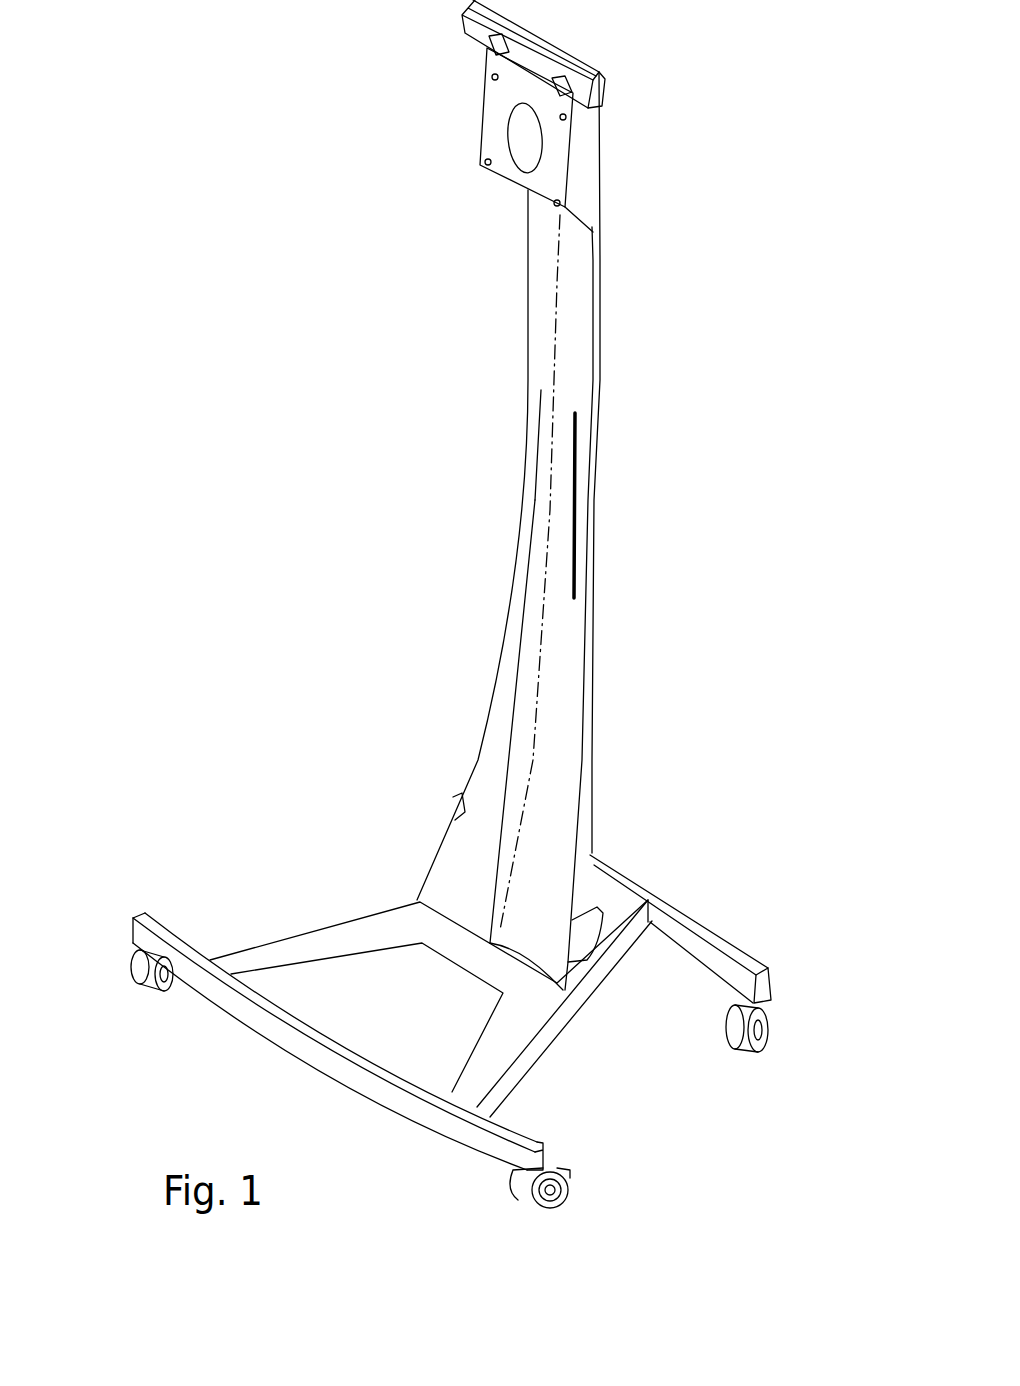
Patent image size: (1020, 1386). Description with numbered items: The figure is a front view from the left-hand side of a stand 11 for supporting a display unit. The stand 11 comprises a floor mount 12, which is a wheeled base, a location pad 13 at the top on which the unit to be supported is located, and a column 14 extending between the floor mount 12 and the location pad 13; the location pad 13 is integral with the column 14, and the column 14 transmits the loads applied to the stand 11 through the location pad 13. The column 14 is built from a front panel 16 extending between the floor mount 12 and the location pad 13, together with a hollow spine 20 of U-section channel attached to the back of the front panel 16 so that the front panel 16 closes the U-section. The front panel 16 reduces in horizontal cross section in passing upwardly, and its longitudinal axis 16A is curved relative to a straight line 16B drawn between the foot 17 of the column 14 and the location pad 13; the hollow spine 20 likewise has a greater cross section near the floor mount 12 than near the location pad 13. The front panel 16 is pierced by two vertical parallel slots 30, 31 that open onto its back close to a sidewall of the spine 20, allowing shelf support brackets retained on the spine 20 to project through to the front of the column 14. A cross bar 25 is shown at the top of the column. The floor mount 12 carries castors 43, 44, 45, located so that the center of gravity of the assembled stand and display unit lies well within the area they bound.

The stand 11 is at (604, 388).
The floor mount 12 is at (365, 931).
The location pad 13 is at (492, 123).
The column 14 is at (597, 281).
The front panel 16 is at (560, 757).
The longitudinal axis 16A is at (547, 630).
The straight line 16B is at (516, 613).
The foot 17 is at (577, 1005).
The hollow spine 20 is at (583, 845).
The top cross bar 25 is at (604, 78).
The slot 30 is at (580, 483).
The slot 31 is at (530, 447).
The castor 43 is at (757, 1052).
The castor 44 is at (567, 1193).
The castor 45 is at (130, 967).